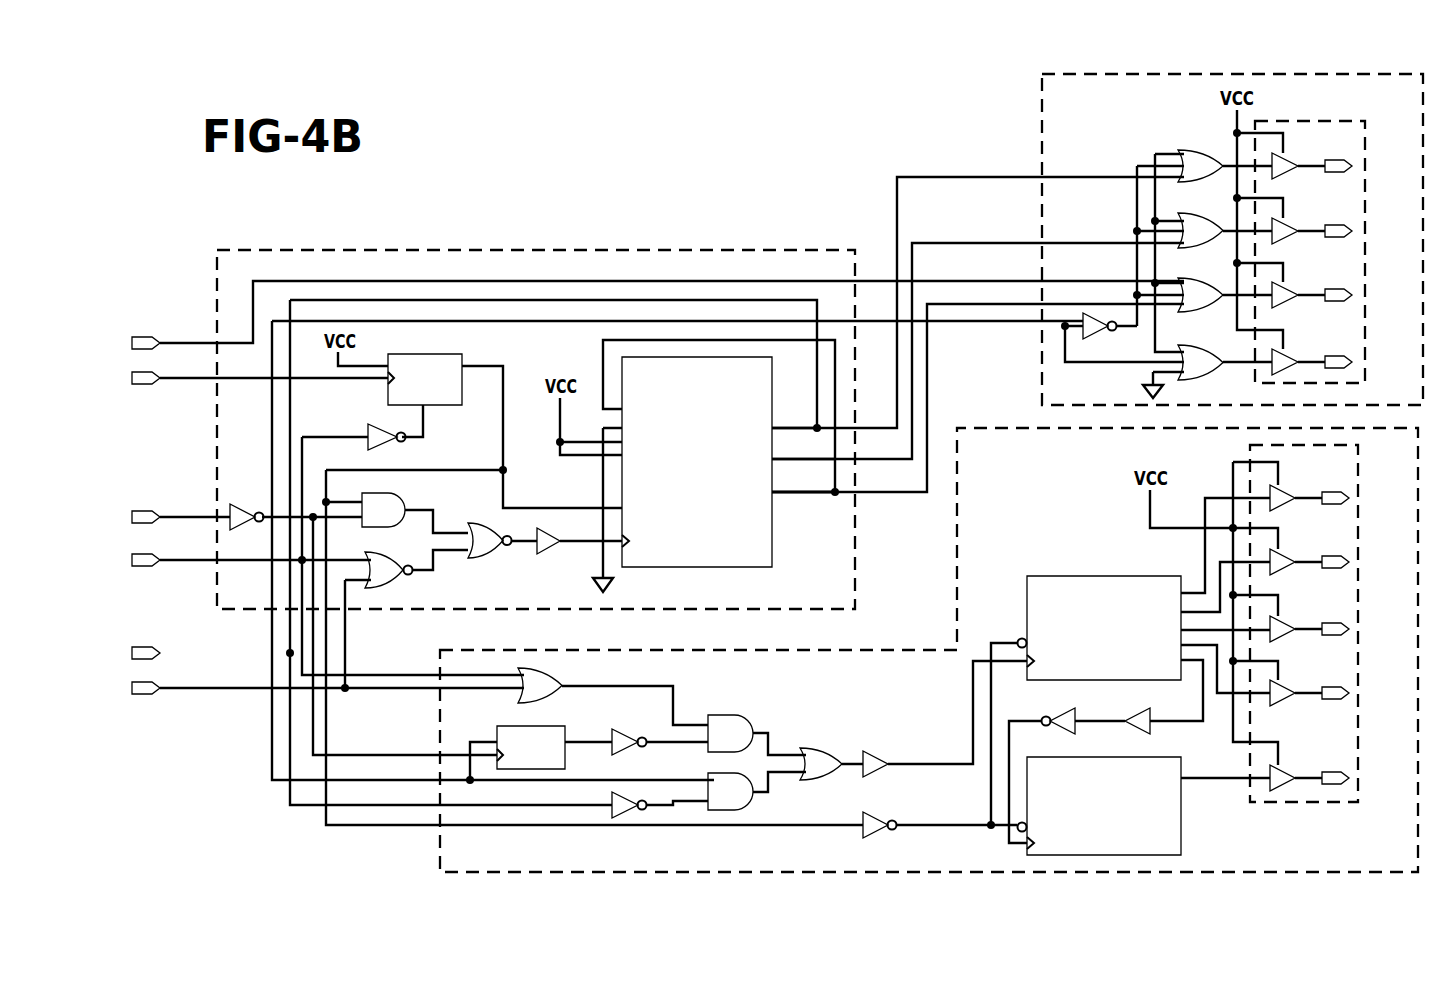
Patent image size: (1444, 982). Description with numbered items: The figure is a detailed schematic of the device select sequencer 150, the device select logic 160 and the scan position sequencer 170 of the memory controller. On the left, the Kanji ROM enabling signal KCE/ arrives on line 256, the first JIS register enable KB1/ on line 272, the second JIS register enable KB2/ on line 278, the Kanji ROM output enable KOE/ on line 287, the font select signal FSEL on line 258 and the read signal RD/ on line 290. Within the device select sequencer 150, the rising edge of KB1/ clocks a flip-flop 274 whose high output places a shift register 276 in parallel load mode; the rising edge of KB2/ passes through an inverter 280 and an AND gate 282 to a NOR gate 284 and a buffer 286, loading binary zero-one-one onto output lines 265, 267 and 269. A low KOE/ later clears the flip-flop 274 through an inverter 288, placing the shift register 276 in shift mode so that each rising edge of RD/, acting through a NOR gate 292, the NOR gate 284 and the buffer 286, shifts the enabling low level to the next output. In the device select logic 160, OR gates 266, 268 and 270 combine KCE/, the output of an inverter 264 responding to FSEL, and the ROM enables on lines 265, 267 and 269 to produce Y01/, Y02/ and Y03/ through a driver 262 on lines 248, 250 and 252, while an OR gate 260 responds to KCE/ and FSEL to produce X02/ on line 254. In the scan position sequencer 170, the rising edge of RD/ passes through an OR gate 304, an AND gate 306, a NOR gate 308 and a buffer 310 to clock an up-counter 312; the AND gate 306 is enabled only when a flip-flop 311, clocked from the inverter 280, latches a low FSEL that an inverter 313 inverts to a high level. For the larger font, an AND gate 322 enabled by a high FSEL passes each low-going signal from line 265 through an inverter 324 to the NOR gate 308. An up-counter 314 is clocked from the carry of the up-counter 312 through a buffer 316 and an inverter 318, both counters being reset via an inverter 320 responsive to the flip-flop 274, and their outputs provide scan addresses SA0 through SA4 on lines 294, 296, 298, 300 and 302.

The device select sequencer 150 is at (410, 250).
The device select logic 160 is at (1042, 100).
The scan position sequencer 170 is at (488, 650).
The line 248 is at (1306, 166).
The line 250 is at (1306, 231).
The line 252 is at (1306, 295).
The line 254 is at (1306, 362).
The line 256 is at (180, 343).
The line 258 is at (195, 640).
The OR gate 260 is at (1208, 352).
The driver 262 is at (1290, 121).
The inverter 264 is at (1094, 333).
The line 265 is at (785, 428).
The OR gate 266 is at (1198, 150).
The line 267 is at (780, 459).
The OR gate 268 is at (1207, 222).
The line 269 is at (782, 492).
The OR gate 270 is at (1208, 284).
The line 272 is at (190, 370).
The flip-flop 274 is at (452, 354).
The shift register 276 is at (683, 567).
The line 278 is at (182, 517).
The inverter 280 is at (244, 504).
The AND gate 282 is at (380, 497).
The NOR gate 284 is at (480, 526).
The buffer 286 is at (548, 552).
The line 287 is at (190, 547).
The inverter 288 is at (376, 424).
The line 290 is at (178, 688).
The NOR gate 292 is at (398, 580).
The line 294 is at (1305, 498).
The line 296 is at (1305, 562).
The line 298 is at (1305, 629).
The line 300 is at (1305, 693).
The line 302 is at (1305, 778).
The OR gate 304 is at (556, 678).
The AND gate 306 is at (735, 715).
The NOR gate 308 is at (818, 748).
The buffer 310 is at (876, 755).
The flip-flop 311 is at (525, 726).
The up-counter 312 is at (1070, 576).
The inverter 313 is at (623, 729).
The up-counter 314 is at (1162, 765).
The buffer 316 is at (1136, 712).
The inverter 318 is at (1062, 712).
The inverter 320 is at (880, 815).
The AND gate 322 is at (730, 810).
The inverter 324 is at (612, 815).